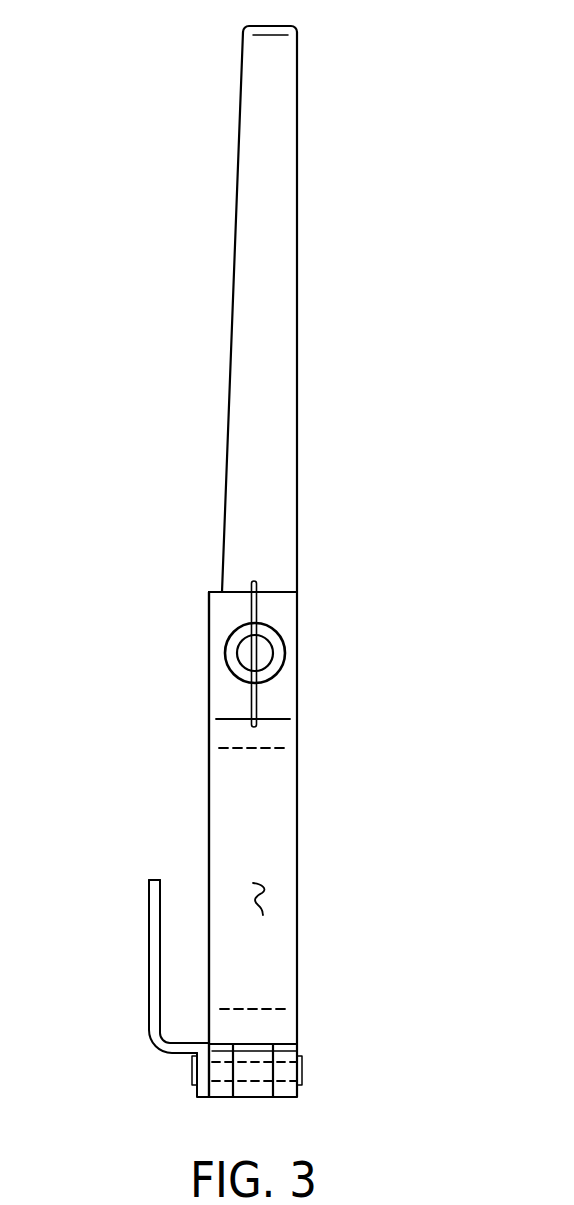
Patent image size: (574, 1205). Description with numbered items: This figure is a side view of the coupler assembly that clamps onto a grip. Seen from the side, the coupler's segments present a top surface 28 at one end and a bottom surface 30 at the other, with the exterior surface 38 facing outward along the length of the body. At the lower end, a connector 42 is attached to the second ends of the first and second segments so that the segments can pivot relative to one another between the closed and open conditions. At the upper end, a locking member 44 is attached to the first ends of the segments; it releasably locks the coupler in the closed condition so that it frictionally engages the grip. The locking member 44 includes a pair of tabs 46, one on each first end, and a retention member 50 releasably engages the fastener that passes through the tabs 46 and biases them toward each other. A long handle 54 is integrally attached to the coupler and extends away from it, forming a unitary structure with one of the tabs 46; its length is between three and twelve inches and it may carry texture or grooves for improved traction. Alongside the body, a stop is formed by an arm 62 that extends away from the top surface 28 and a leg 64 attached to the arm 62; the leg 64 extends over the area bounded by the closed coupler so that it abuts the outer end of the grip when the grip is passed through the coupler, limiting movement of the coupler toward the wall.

The handle 54 is at (265, 165).
The tab 46 is at (222, 611).
The retention member 50 is at (259, 603).
The locking member 44 is at (322, 659).
The top surface 28 is at (209, 767).
The bottom surface 30 is at (299, 806).
The exterior surface 38 is at (266, 902).
The connector 42 is at (260, 1073).
The arm 62 is at (150, 960).
The leg 64 is at (182, 1052).